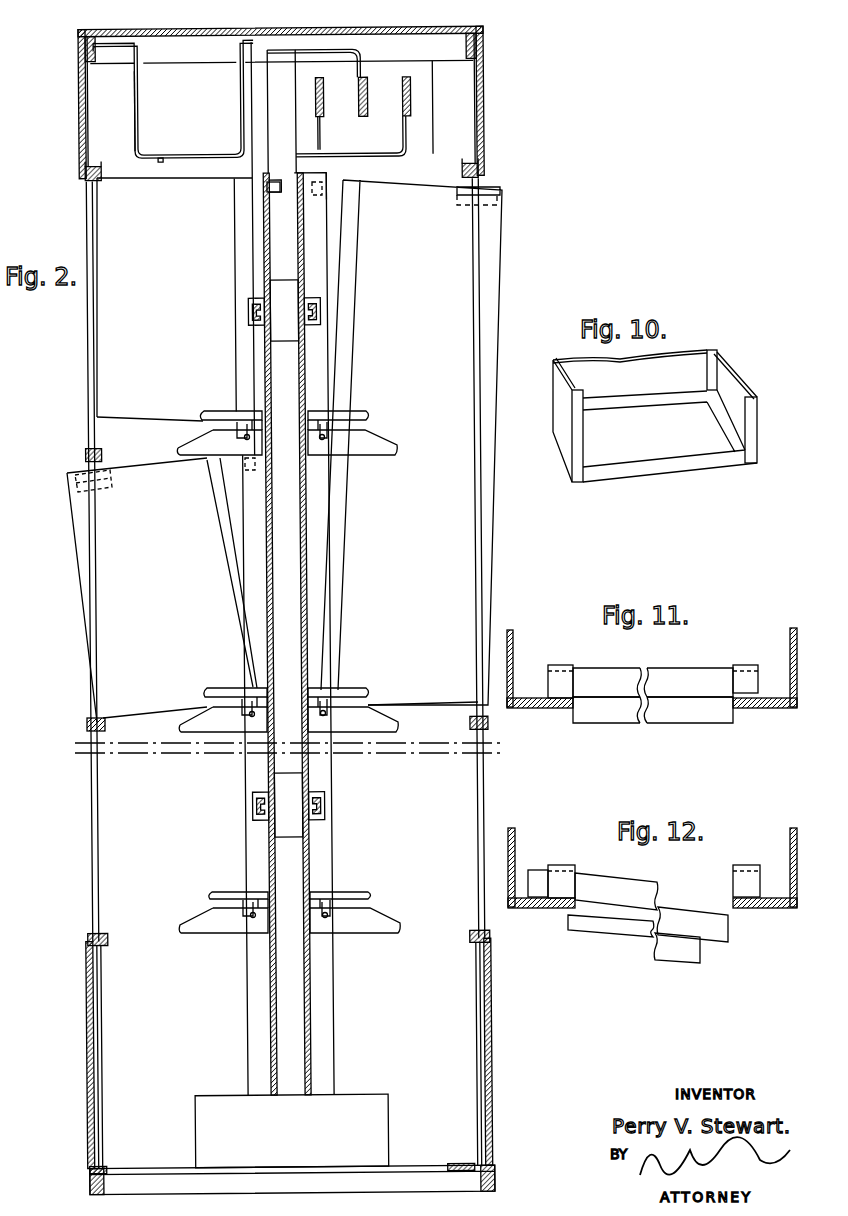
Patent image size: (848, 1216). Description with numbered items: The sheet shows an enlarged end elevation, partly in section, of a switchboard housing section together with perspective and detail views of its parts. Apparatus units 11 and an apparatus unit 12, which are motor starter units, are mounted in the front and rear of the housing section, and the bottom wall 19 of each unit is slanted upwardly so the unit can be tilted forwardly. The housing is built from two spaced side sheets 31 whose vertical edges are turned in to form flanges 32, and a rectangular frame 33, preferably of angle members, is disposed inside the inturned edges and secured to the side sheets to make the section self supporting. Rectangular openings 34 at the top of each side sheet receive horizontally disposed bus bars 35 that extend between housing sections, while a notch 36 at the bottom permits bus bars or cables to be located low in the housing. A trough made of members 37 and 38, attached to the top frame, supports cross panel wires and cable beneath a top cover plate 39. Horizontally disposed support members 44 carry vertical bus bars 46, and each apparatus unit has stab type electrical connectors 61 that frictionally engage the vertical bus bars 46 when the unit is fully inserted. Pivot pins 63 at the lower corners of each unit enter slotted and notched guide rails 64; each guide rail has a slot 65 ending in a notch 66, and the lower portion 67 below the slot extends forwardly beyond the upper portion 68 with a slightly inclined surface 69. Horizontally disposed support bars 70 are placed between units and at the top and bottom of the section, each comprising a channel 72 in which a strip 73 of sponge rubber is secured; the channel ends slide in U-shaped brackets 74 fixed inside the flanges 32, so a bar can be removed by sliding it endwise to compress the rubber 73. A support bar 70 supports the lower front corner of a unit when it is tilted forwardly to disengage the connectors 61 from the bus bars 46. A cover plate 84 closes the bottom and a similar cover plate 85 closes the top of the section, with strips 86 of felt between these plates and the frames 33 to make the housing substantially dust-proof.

In FIG. 2, the apparatus unit 11 is at (160, 282).
In FIG. 2, the apparatus unit 12 is at (425, 328).
In FIG. 2, the bottom wall 19 is at (124, 418).
In FIG. 10, the side sheet 31 is at (563, 385).
In FIG. 11, the side sheet 31 is at (513, 643).
In FIG. 12, the side sheet 31 is at (515, 838).
In FIG. 10, the flange 32 is at (580, 482).
In FIG. 11, the flange 32 is at (552, 708).
In FIG. 12, the flange 32 is at (527, 910).
In FIG. 2, the rectangular frame 33 is at (443, 30).
In FIG. 10, the rectangular frame 33 is at (665, 470).
In FIG. 2, the rectangular opening 34 is at (195, 70).
In FIG. 2, the horizontally disposed bus bar 35 is at (410, 105).
In FIG. 2, the notch 36 is at (380, 1122).
In FIG. 2, the trough member 37 is at (239, 90).
In FIG. 2, the trough member 38 is at (139, 100).
In FIG. 2, the top cover plate 39 is at (302, 28).
In FIG. 2, the support member 44 is at (250, 313).
In FIG. 2, the vertical bus bar 46 is at (292, 508).
In FIG. 2, the electrical connector 61 is at (272, 185).
In FIG. 2, the pivot pin 63 is at (243, 437).
In FIG. 2, the guide rail 64 is at (307, 684).
In FIG. 2, the slot 65 is at (215, 905).
In FIG. 2, the notch 66 is at (250, 916).
In FIG. 2, the lower portion of guide rail 67 is at (183, 928).
In FIG. 2, the upper portion of guide rail 68 is at (234, 892).
In FIG. 2, the inclined surface 69 is at (190, 440).
In FIG. 2, the support bar 70 is at (62, 460).
In FIG. 11, the support bar 70 is at (644, 694).
In FIG. 12, the support bar 70 is at (641, 912).
In FIG. 2, the channel 72 is at (107, 726).
In FIG. 11, the channel 72 is at (672, 668).
In FIG. 12, the channel 72 is at (623, 875).
In FIG. 11, the strip of sponge rubber 73 is at (706, 726).
In FIG. 12, the strip of sponge rubber 73 is at (598, 940).
In FIG. 11, the U-shaped bracket 74 is at (560, 665).
In FIG. 12, the U-shaped bracket 74 is at (565, 865).
In FIG. 2, the cover plate 84 is at (80, 1056).
In FIG. 2, the cover plate 85 is at (80, 100).
In FIG. 2, the felt strip 86 is at (90, 1196).